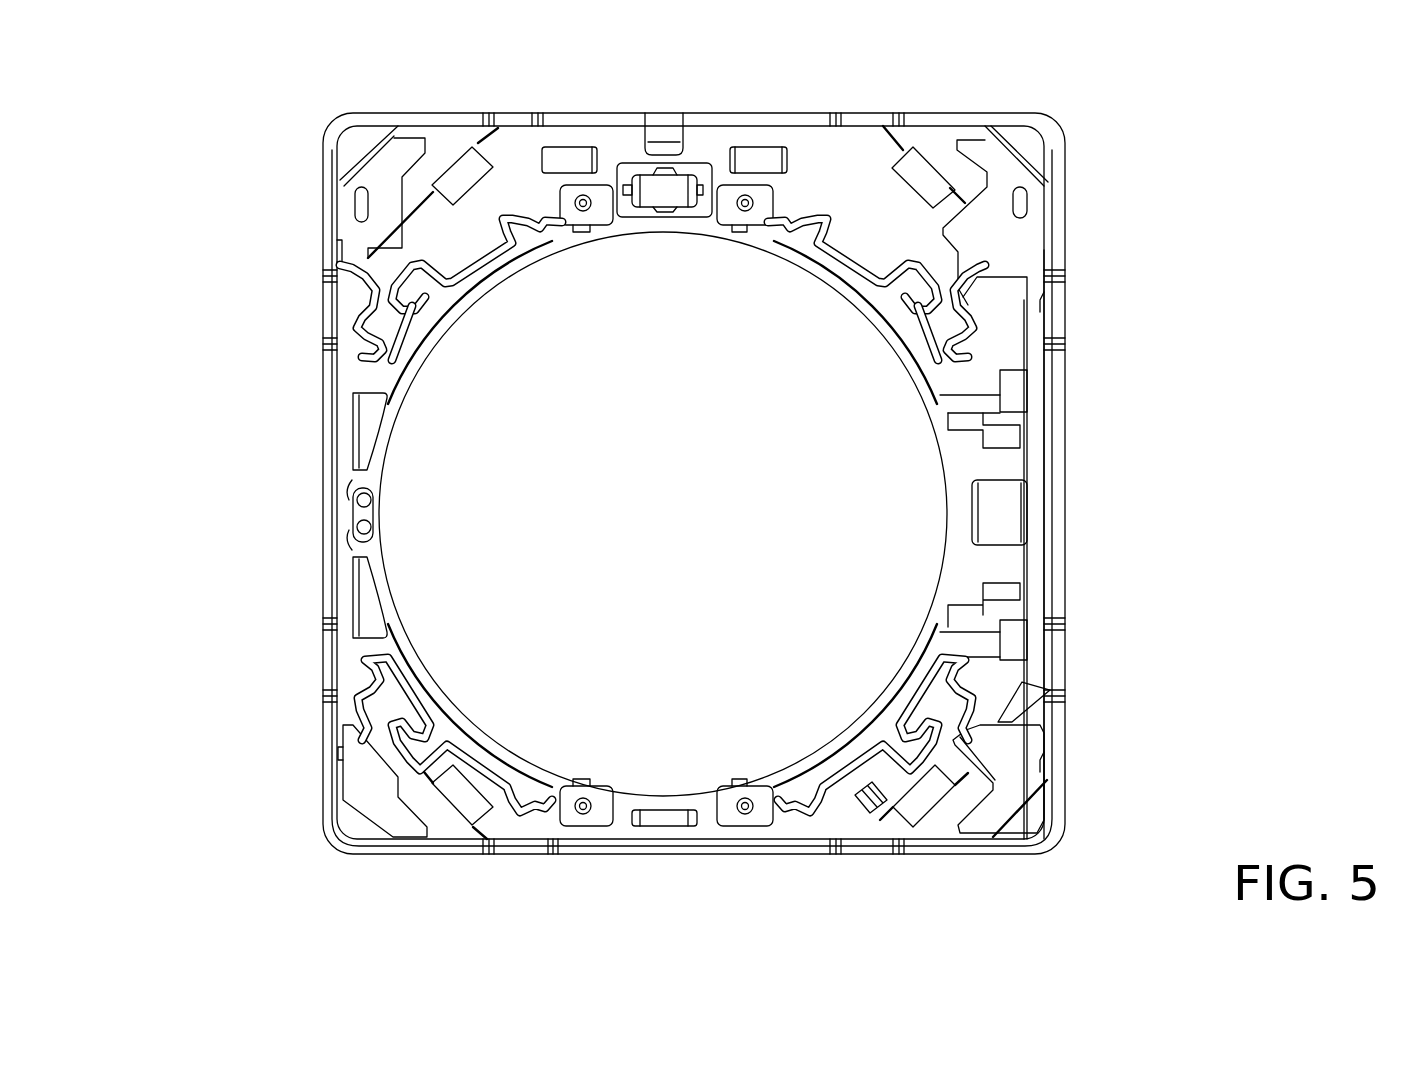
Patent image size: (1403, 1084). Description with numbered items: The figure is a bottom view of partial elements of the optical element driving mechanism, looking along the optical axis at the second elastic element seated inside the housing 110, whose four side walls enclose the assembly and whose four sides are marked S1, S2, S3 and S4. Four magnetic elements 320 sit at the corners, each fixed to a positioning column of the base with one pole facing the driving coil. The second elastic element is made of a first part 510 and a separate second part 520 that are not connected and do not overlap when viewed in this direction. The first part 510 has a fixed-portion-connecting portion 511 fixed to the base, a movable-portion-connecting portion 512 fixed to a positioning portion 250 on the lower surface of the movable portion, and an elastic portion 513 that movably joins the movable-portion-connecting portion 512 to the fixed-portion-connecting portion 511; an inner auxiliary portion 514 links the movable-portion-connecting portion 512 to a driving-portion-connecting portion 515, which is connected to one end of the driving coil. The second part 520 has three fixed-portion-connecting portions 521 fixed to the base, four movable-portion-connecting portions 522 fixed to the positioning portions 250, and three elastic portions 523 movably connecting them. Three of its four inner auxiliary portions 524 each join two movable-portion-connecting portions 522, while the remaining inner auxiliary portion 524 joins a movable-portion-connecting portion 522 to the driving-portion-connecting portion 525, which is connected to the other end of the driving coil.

The housing 110 is at (1065, 158).
The positioning portion 250 is at (583, 203).
The magnetic element 320 is at (937, 143).
The first part 510 is at (1048, 248).
The fixed-portion-connecting portion 511 is at (1030, 226).
The movable-portion-connecting portion 512 is at (822, 153).
The elastic portion 513 is at (965, 293).
The inner auxiliary portion 514 is at (1000, 383).
The driving-portion-connecting portion 515 is at (1005, 435).
The second part 520 is at (1050, 742).
The fixed-portion-connecting portion 521 is at (355, 188).
The movable-portion-connecting portion 522 is at (358, 526).
The elastic portion 523 is at (352, 316).
The inner auxiliary portion 524 is at (935, 630).
The driving-portion-connecting portion 525 is at (1010, 598).
The first side S1 is at (1065, 518).
The second side S2 is at (738, 125).
The third side S3 is at (325, 572).
The fourth side S4 is at (740, 856).